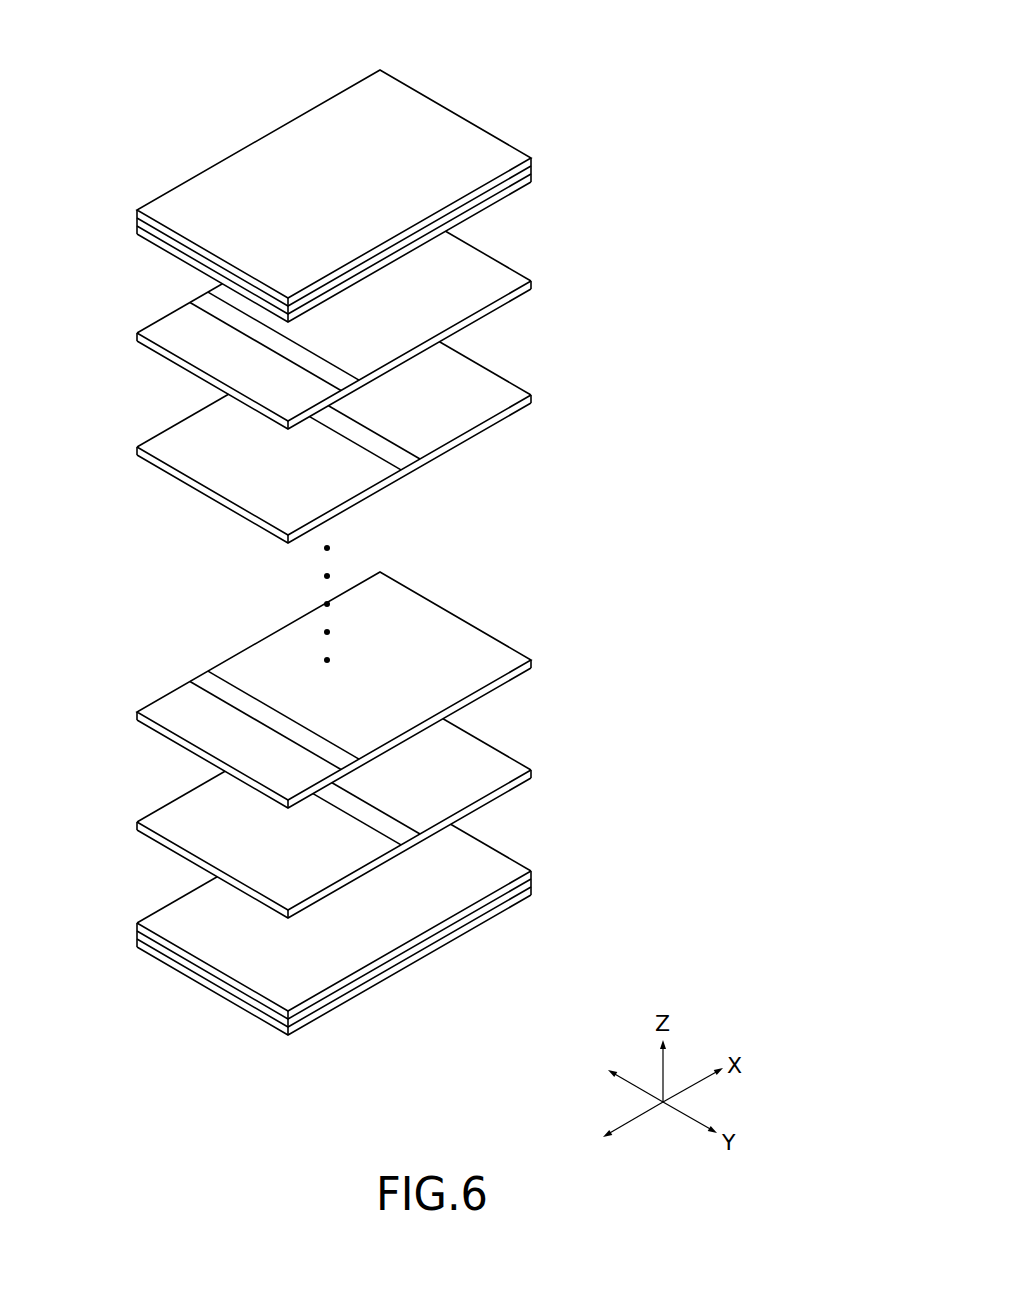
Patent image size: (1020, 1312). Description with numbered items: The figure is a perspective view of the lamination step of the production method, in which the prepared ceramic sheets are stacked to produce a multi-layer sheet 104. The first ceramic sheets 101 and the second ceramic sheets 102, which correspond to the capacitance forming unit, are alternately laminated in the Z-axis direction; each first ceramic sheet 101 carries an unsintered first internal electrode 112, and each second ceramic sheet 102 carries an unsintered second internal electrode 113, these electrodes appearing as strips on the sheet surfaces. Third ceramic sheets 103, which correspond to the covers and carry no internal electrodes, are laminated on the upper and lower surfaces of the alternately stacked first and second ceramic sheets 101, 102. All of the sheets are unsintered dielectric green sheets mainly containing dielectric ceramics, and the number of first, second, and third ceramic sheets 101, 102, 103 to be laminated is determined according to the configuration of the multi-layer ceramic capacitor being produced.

The multi-layer sheet 104 is at (487, 76).
The third ceramic sheet 103 is at (551, 163).
The first ceramic sheet 101 is at (551, 276).
The second ceramic sheet 102 is at (551, 387).
The unsintered first internal electrode 112 is at (168, 330).
The unsintered second internal electrode 113 is at (168, 445).